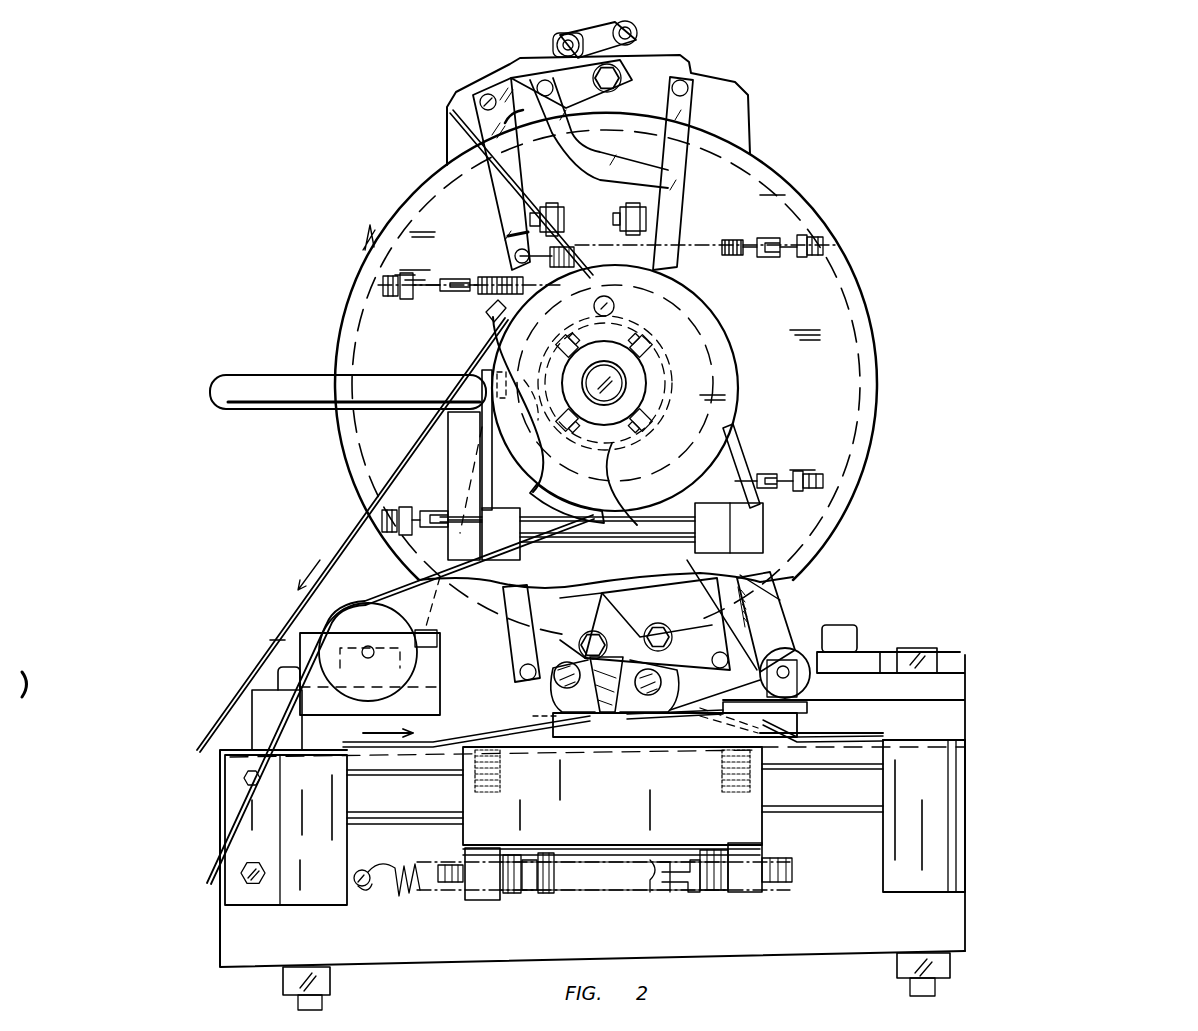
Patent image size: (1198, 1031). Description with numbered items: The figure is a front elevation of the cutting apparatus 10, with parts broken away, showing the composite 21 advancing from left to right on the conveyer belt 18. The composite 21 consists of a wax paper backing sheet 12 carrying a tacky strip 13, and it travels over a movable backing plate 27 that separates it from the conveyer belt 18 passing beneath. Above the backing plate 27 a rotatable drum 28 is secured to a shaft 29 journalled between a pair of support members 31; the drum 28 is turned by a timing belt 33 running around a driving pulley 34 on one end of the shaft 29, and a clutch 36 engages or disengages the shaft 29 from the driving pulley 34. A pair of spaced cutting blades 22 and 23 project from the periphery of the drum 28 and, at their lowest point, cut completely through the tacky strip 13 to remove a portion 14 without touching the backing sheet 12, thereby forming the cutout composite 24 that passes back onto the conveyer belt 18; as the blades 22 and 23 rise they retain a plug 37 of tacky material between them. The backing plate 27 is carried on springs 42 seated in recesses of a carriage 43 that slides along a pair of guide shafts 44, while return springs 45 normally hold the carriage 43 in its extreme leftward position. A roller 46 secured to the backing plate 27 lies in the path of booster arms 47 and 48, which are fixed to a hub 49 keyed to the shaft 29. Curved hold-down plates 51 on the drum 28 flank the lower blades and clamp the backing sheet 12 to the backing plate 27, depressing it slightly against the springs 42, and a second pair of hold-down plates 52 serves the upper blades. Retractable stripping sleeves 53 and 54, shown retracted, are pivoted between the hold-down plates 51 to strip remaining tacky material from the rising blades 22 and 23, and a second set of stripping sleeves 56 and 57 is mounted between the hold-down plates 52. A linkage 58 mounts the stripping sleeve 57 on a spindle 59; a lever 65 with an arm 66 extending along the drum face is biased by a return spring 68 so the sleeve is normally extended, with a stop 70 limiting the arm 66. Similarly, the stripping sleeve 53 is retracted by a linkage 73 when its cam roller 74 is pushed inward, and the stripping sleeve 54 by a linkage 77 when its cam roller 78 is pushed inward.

The cutting apparatus 10 is at (857, 96).
The backing sheet 12 is at (215, 760).
The tacky strip 13 is at (343, 745).
The portion 14 is at (610, 720).
The conveyer belt 18 is at (382, 758).
The composite 21 is at (246, 742).
The cutting blade 22 is at (618, 658).
The cutting blade 23 is at (578, 658).
The cutout composite 24 is at (826, 709).
The backing plate 27 is at (578, 712).
The drum 28 is at (790, 192).
The shaft 29 is at (652, 366).
The support member 31 is at (733, 450).
The timing belt 33 is at (397, 462).
The driving pulley 34 is at (728, 322).
The clutch 36 is at (521, 440).
The plug 37 is at (606, 684).
The spring 42 is at (500, 776).
The carriage 43 is at (465, 845).
The guide shaft 44 is at (812, 815).
The return spring 45 is at (412, 892).
The roller 46 is at (790, 655).
The booster arm 47 is at (690, 604).
The booster arm 48 is at (532, 212).
The hub 49 is at (615, 314).
The hold-down plate 51 is at (645, 710).
The hold-down plate 52 is at (745, 107).
The stripping sleeve 53 is at (663, 683).
The stripping sleeve 54 is at (556, 686).
The stripping sleeve 56 is at (560, 33).
The stripping sleeve 57 is at (636, 32).
The linkage 58 is at (471, 96).
The spindle 59 is at (760, 258).
The lever 65 is at (496, 193).
The arm 66 is at (512, 205).
The return spring 68 is at (738, 238).
The stop 70 is at (548, 215).
The linkage 73 is at (499, 607).
The cam roller 74 is at (668, 630).
The linkage 77 is at (778, 588).
The cam roller 78 is at (583, 640).